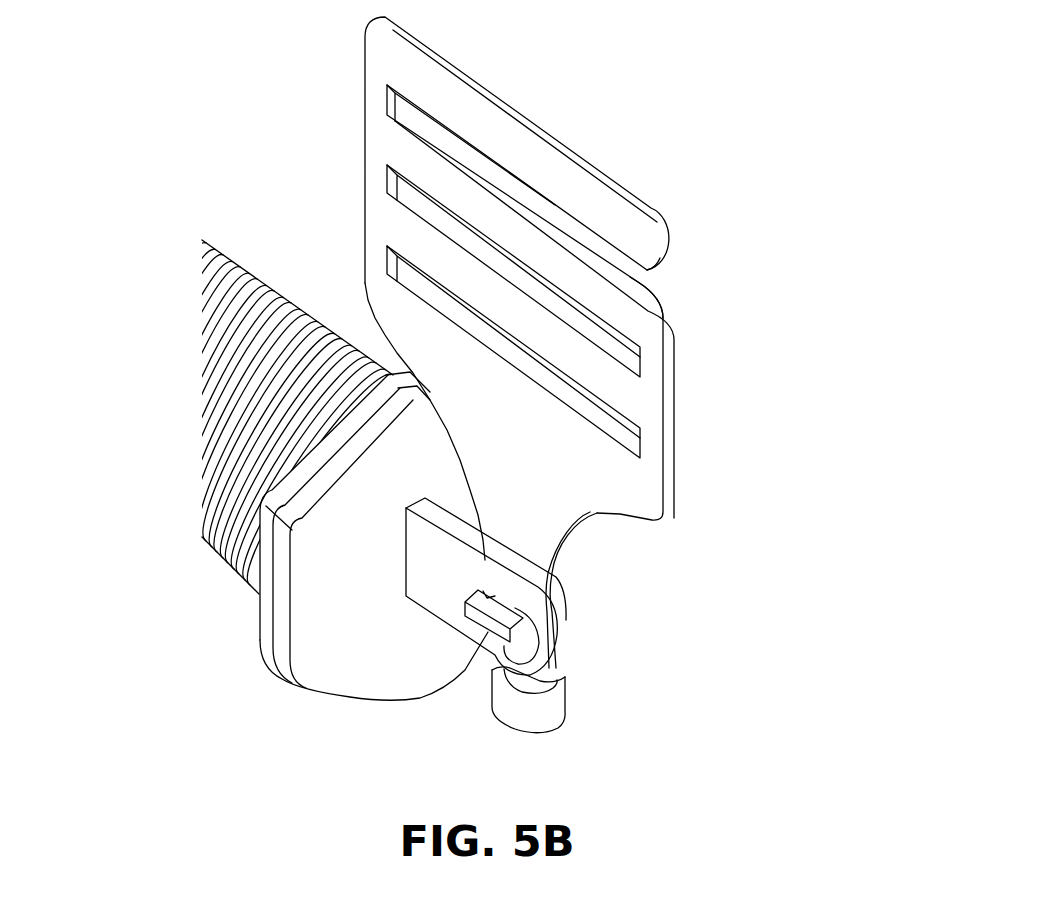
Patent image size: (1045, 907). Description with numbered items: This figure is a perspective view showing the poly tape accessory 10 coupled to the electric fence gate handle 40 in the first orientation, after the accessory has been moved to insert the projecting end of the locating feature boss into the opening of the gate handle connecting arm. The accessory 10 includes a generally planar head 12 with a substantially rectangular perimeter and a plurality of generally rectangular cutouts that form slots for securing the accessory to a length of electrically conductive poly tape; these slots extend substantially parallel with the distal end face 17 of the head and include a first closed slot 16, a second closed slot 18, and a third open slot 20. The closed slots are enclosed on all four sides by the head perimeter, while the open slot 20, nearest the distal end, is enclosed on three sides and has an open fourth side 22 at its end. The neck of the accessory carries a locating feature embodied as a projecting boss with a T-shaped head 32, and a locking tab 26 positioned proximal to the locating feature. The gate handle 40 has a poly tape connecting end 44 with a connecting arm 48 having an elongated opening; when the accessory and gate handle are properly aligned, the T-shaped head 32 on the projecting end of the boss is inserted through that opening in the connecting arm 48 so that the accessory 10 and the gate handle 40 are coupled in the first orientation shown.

The poly tape accessory 10 is at (656, 157).
The head 12 is at (645, 497).
The first closed slot 16 is at (387, 272).
The distal end face 17 is at (541, 120).
The second closed slot 18 is at (386, 192).
The third open slot 20 is at (443, 128).
The opening 22 is at (648, 282).
The locking tab 26 is at (583, 720).
The T-shaped head 32 is at (490, 634).
The electric fence gate handle 40 is at (252, 254).
The poly tape connecting end 44 is at (282, 660).
The connecting arm 48 is at (440, 600).